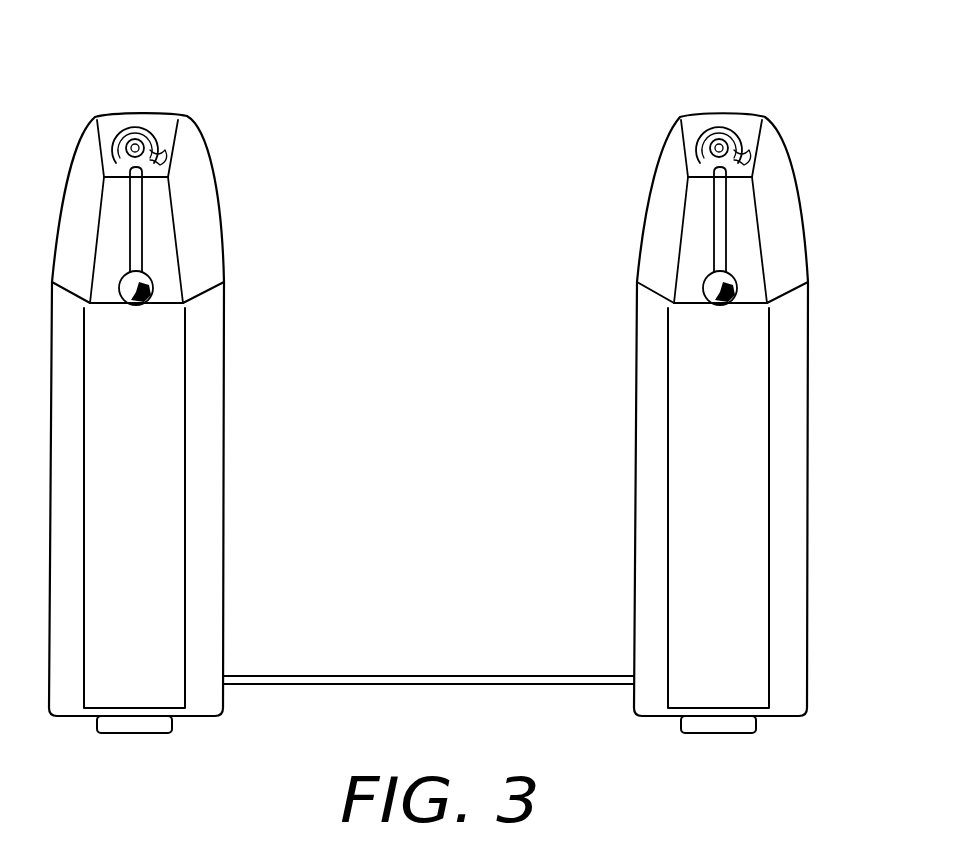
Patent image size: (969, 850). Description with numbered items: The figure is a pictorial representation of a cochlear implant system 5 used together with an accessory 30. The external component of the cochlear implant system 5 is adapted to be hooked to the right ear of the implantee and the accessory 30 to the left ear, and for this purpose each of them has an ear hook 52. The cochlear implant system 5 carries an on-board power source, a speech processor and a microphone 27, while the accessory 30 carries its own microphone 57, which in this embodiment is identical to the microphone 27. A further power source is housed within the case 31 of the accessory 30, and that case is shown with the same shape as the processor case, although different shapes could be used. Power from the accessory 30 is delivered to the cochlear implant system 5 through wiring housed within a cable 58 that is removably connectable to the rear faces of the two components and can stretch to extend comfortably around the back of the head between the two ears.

The cochlear implant system 5 is at (195, 392).
The microphone 27 is at (142, 150).
The ear hook 52 is at (138, 250).
The microphone 57 is at (727, 140).
The accessory 30 is at (705, 375).
The case 31 is at (637, 417).
The cable 58 is at (310, 675).